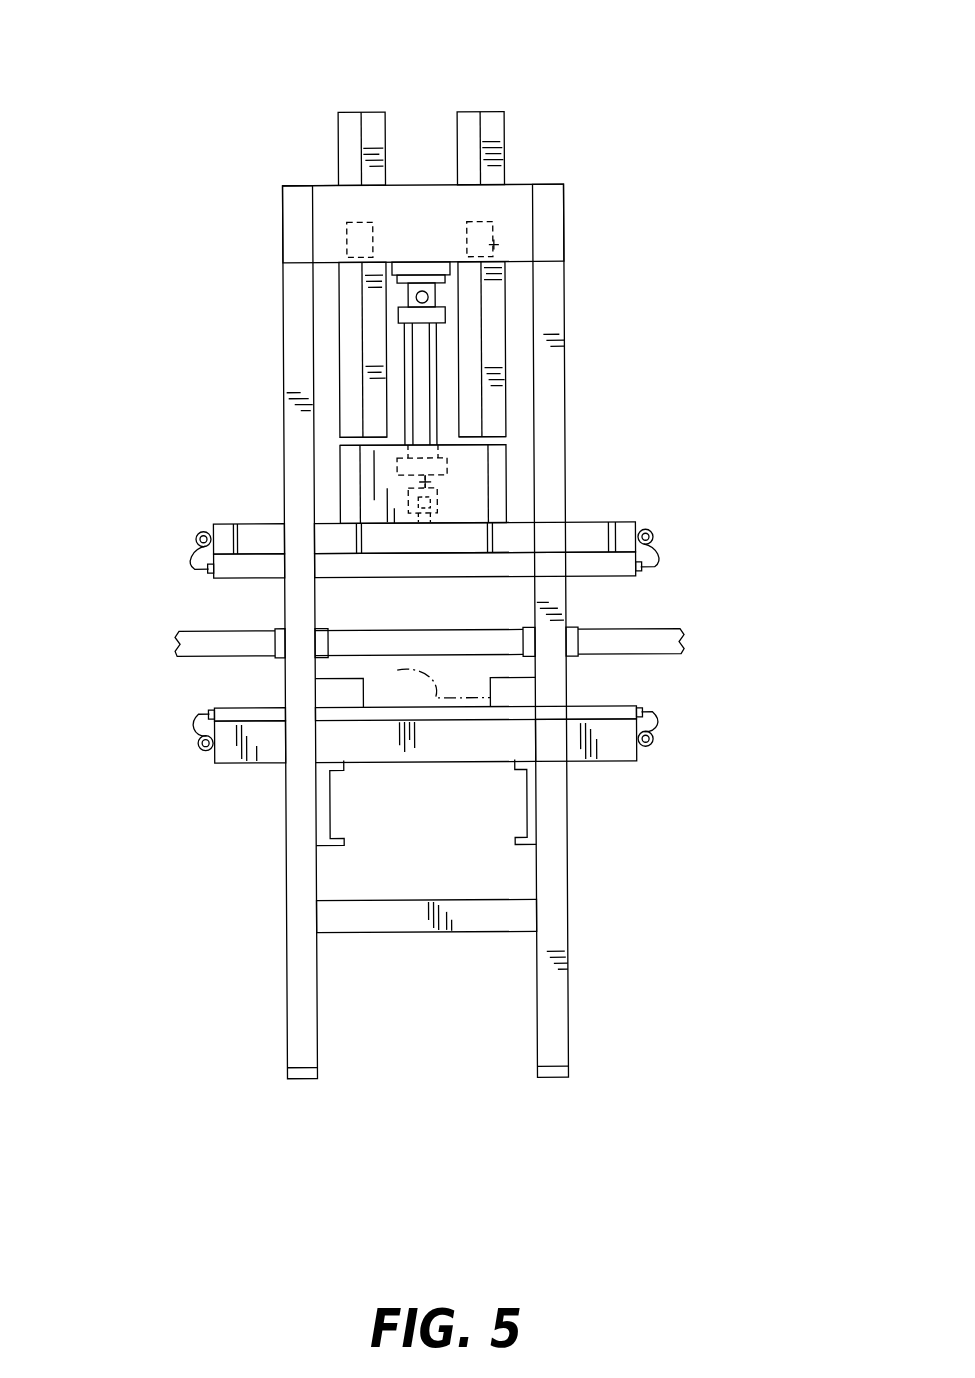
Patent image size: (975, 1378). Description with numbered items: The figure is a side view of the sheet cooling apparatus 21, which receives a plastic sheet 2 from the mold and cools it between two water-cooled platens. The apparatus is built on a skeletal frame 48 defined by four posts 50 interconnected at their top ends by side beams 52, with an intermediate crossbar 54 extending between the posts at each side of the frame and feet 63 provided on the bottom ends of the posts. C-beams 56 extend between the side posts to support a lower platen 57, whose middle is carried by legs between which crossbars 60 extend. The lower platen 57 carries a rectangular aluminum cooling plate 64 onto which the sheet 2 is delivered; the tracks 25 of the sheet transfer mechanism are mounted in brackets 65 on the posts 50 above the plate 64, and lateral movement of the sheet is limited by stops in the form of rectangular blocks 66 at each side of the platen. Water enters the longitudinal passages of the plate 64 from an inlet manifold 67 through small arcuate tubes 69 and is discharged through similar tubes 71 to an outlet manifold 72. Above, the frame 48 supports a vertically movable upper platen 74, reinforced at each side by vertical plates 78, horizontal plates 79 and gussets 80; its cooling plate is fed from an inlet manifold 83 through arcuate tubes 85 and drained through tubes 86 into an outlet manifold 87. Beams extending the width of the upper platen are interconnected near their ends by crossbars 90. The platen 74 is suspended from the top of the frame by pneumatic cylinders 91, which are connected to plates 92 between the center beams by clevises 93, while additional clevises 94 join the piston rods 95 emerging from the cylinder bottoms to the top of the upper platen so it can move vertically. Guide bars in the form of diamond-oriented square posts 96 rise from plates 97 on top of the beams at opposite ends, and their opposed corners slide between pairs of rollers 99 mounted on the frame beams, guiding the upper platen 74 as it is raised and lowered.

The sheet cooling apparatus 21 is at (598, 110).
The posts 96 is at (341, 113).
The side beams 52 is at (434, 192).
The skeletal frame 48 is at (285, 185).
The rollers 99 is at (349, 240).
The posts 50 is at (293, 889).
The plates 97 is at (497, 437).
The plates 92 is at (424, 274).
The clevises 93 is at (404, 300).
The pneumatic cylinders 91 is at (423, 340).
The crossbars 90 is at (478, 503).
The piston rods 95 is at (441, 485).
The clevises 94 is at (438, 503).
The horizontal plates 79 is at (267, 548).
The vertical plates 78 is at (250, 535).
The upper platen 74 is at (634, 527).
The gussets 80 is at (230, 528).
The inlet manifold 83 is at (196, 533).
The tubes 85 is at (192, 565).
The outlet manifold 87 is at (655, 535).
The tubes 86 is at (655, 553).
The tracks 25 is at (660, 643).
The brackets 65 is at (280, 633).
The plastic sheet 2 is at (431, 678).
The rectangular blocks 66 is at (333, 688).
The cooling plate 64 is at (613, 713).
The intermediate crossbar 54 is at (433, 750).
The lower platen 57 is at (622, 755).
The tubes 69 is at (190, 718).
The inlet manifold 67 is at (198, 745).
The tubes 71 is at (660, 718).
The outlet manifold 72 is at (653, 747).
The C-beams 56 is at (335, 845).
The crossbars 60 is at (407, 932).
The feet 63 is at (543, 1077).